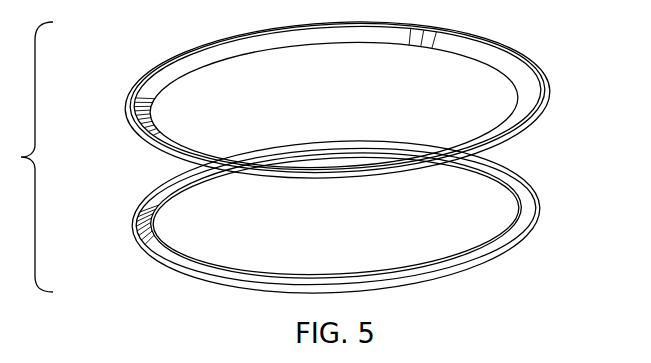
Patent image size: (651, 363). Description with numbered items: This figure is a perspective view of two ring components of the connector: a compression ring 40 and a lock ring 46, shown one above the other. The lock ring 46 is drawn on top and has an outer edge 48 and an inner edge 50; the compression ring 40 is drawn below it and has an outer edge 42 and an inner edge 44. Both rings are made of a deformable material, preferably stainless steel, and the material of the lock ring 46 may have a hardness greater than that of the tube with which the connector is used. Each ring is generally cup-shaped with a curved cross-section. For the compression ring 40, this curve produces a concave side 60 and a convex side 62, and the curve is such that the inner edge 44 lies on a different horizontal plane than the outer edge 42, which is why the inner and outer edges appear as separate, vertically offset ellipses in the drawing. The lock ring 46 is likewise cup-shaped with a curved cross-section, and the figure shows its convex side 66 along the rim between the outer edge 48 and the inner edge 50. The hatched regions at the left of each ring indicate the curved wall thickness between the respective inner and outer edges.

The compression ring 40 is at (538, 193).
The outer edge 42 is at (133, 216).
The inner edge 44 is at (164, 198).
The lock ring 46 is at (549, 90).
The outer edge 48 is at (137, 140).
The inner edge 50 is at (217, 63).
The concave side 60 is at (493, 175).
The convex side 62 is at (474, 268).
The convex side 66 is at (178, 65).